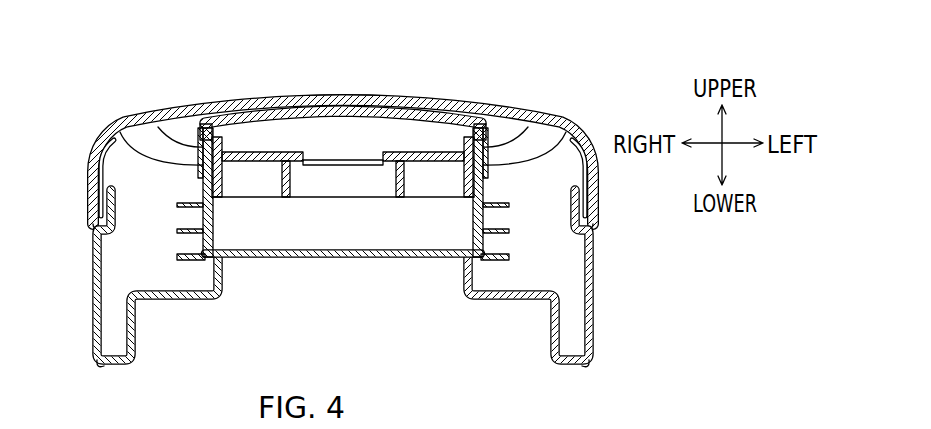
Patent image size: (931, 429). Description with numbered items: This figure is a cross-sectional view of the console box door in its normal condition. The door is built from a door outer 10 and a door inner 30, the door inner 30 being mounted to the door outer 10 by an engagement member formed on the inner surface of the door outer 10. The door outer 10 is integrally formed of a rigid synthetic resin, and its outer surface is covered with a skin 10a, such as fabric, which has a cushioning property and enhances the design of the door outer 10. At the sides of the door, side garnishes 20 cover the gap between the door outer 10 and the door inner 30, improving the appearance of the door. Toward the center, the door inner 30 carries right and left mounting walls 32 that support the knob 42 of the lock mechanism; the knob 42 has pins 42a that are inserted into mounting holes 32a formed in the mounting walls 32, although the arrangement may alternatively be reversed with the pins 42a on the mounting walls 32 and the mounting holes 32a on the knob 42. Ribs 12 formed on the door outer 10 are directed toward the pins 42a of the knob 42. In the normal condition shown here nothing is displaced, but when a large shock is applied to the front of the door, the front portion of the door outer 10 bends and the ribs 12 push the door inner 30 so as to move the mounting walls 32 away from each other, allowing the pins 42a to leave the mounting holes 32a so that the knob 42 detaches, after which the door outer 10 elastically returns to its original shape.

The door outer 10 is at (322, 85).
The skin 10a is at (355, 96).
The ribs 12 is at (212, 125).
The side garnishes 20 is at (93, 262).
The door inner 30 is at (336, 259).
The mounting walls 32 is at (204, 127).
The mounting holes 32a is at (119, 126).
The knob 42 is at (266, 143).
The pins 42a is at (190, 129).